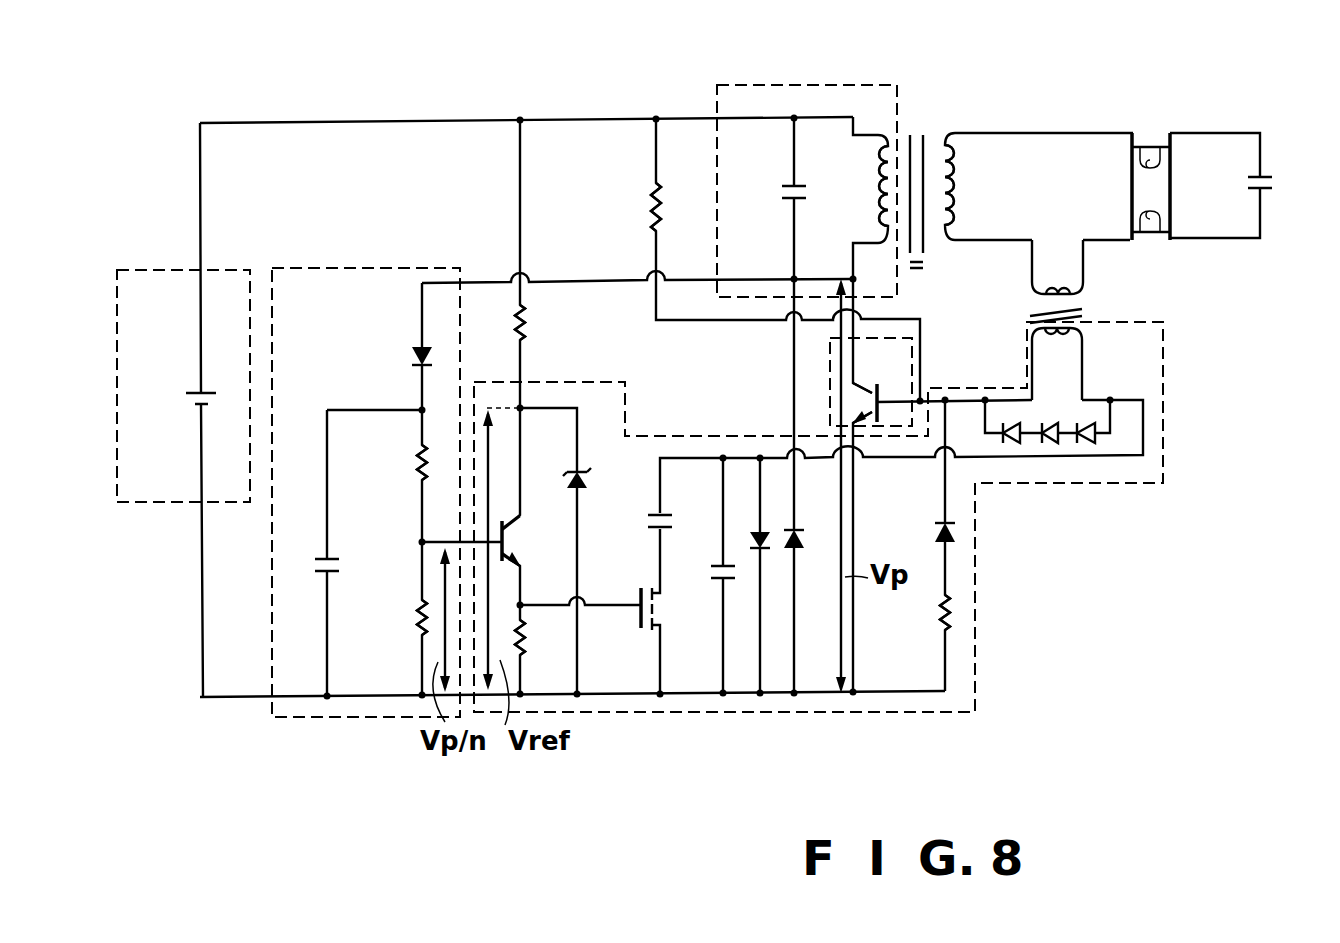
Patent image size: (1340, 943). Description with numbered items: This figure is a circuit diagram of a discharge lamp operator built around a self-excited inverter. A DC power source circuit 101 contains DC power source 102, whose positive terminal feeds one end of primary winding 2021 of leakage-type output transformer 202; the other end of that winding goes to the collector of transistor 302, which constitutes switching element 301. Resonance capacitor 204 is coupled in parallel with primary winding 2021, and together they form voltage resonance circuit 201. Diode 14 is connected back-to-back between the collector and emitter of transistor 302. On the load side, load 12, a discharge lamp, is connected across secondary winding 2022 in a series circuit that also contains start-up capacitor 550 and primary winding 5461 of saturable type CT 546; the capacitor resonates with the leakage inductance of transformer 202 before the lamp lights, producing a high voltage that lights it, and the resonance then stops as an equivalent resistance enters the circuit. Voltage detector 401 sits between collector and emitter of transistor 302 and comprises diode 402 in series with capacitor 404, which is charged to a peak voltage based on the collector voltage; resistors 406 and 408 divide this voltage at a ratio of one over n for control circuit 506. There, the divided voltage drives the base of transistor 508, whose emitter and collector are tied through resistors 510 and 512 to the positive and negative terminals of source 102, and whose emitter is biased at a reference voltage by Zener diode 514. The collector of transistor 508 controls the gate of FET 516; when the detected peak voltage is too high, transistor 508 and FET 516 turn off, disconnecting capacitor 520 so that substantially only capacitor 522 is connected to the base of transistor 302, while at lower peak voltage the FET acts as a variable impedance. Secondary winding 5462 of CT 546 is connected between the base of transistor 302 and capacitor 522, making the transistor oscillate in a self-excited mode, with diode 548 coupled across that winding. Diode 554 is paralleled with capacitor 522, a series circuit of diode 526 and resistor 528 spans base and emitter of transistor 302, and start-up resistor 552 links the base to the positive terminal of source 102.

The DC power source circuit 101 is at (165, 503).
The DC power source 102 is at (195, 392).
The voltage detector 401 is at (380, 717).
The diode 402 is at (412, 355).
The capacitor 404 is at (338, 565).
The resistor 406 is at (412, 462).
The resistor 408 is at (412, 622).
The resistor 510 is at (527, 328).
The transistor 508 is at (507, 548).
The resistor 512 is at (521, 652).
The Zener diode 514 is at (585, 484).
The FET 516 is at (640, 612).
The capacitor 520 is at (668, 517).
The capacitor 522 is at (715, 580).
The diode 554 is at (760, 530).
The diode 14 is at (800, 530).
The diode 526 is at (940, 532).
The resistor 528 is at (940, 628).
The start-up capacitor 550 is at (655, 200).
The resonance capacitor 204 is at (786, 192).
The voltage resonance circuit 201 is at (797, 85).
The output transformer 202 is at (914, 125).
The primary winding 2021 is at (878, 205).
The secondary winding 2022 is at (966, 192).
The primary winding 5461 is at (1060, 280).
The saturable type CT 546 is at (1085, 312).
The secondary winding 5462 is at (1068, 345).
The diode 548 is at (1058, 440).
The load 12 is at (1175, 216).
The start-up resistor 552 is at (1265, 183).
The transistor 302 is at (878, 392).
The switching element 301 is at (830, 380).
The control circuit 506 is at (688, 713).